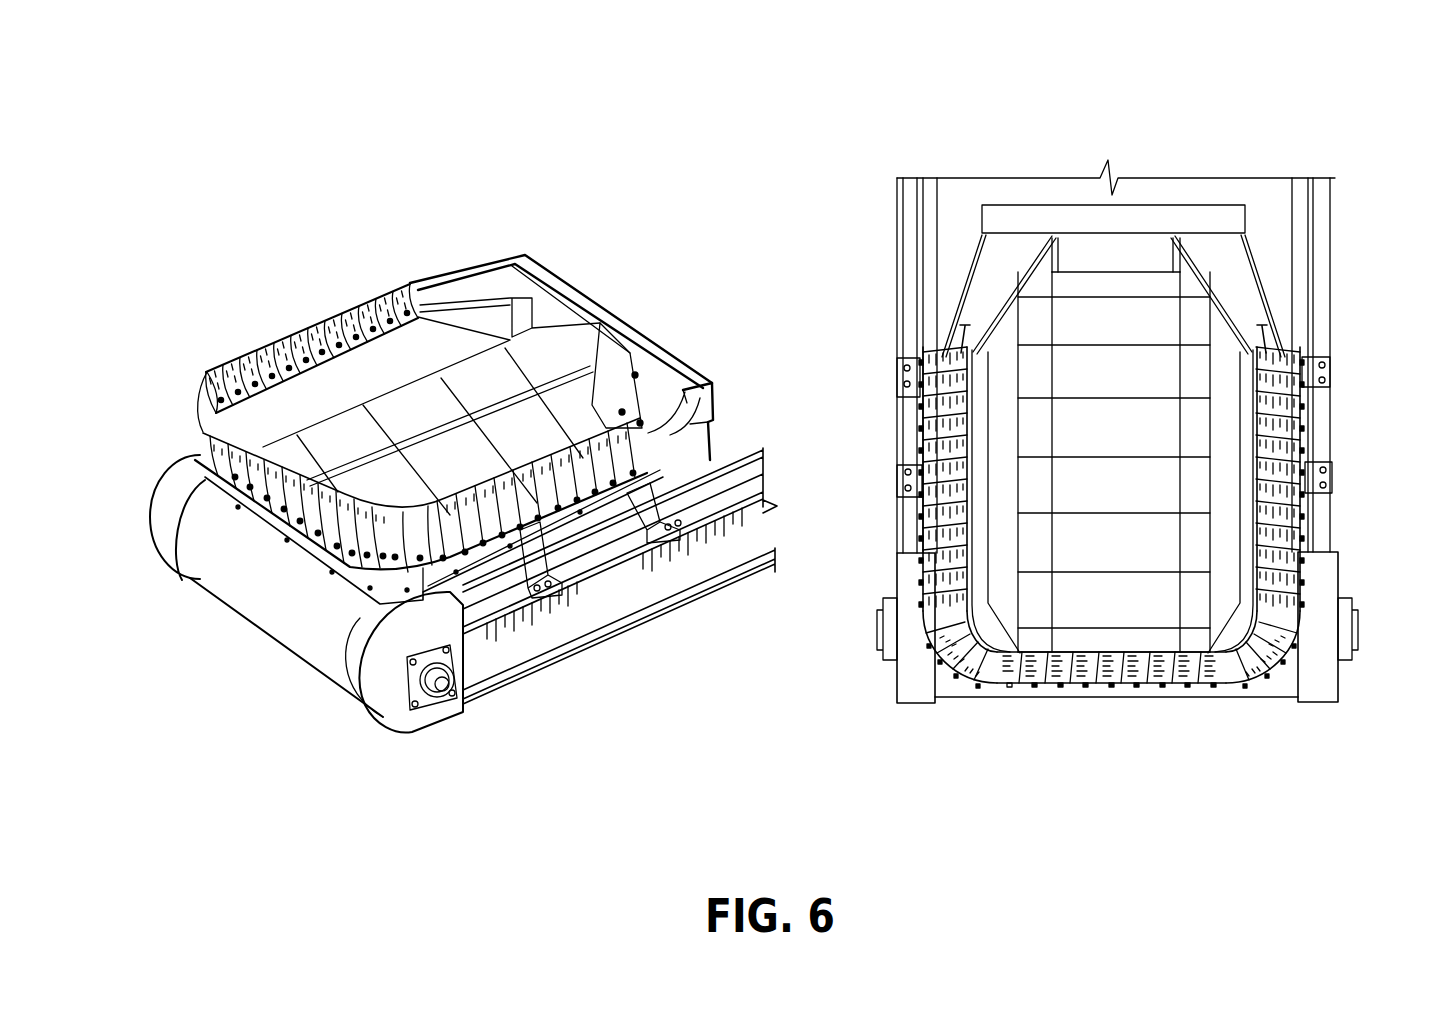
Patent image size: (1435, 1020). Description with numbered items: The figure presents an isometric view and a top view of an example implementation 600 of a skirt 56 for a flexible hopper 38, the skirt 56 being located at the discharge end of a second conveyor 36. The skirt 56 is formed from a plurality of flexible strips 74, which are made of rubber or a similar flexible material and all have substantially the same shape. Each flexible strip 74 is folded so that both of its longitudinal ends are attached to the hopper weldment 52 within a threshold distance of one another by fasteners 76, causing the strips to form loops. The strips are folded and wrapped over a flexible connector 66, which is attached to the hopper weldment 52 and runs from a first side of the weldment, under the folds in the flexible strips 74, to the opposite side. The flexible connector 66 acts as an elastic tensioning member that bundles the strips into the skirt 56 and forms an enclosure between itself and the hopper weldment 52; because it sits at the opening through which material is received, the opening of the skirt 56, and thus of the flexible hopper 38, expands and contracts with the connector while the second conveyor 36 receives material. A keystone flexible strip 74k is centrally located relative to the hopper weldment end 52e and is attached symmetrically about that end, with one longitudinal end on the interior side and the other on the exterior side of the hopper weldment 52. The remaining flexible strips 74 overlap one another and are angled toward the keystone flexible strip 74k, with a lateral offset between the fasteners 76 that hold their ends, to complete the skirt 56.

The example implementation 600 is at (252, 36).
The flexible hopper 38 is at (264, 240).
The second conveyor 36 is at (312, 695).
The hopper weldment 52 is at (603, 503).
The hopper weldment end 52e is at (325, 568).
The skirt 56 is at (227, 352).
The flexible connector 66 is at (640, 430).
The flexible strips 74 is at (193, 425).
The keystone flexible strip 74k is at (1105, 690).
The fasteners 76 is at (290, 328).